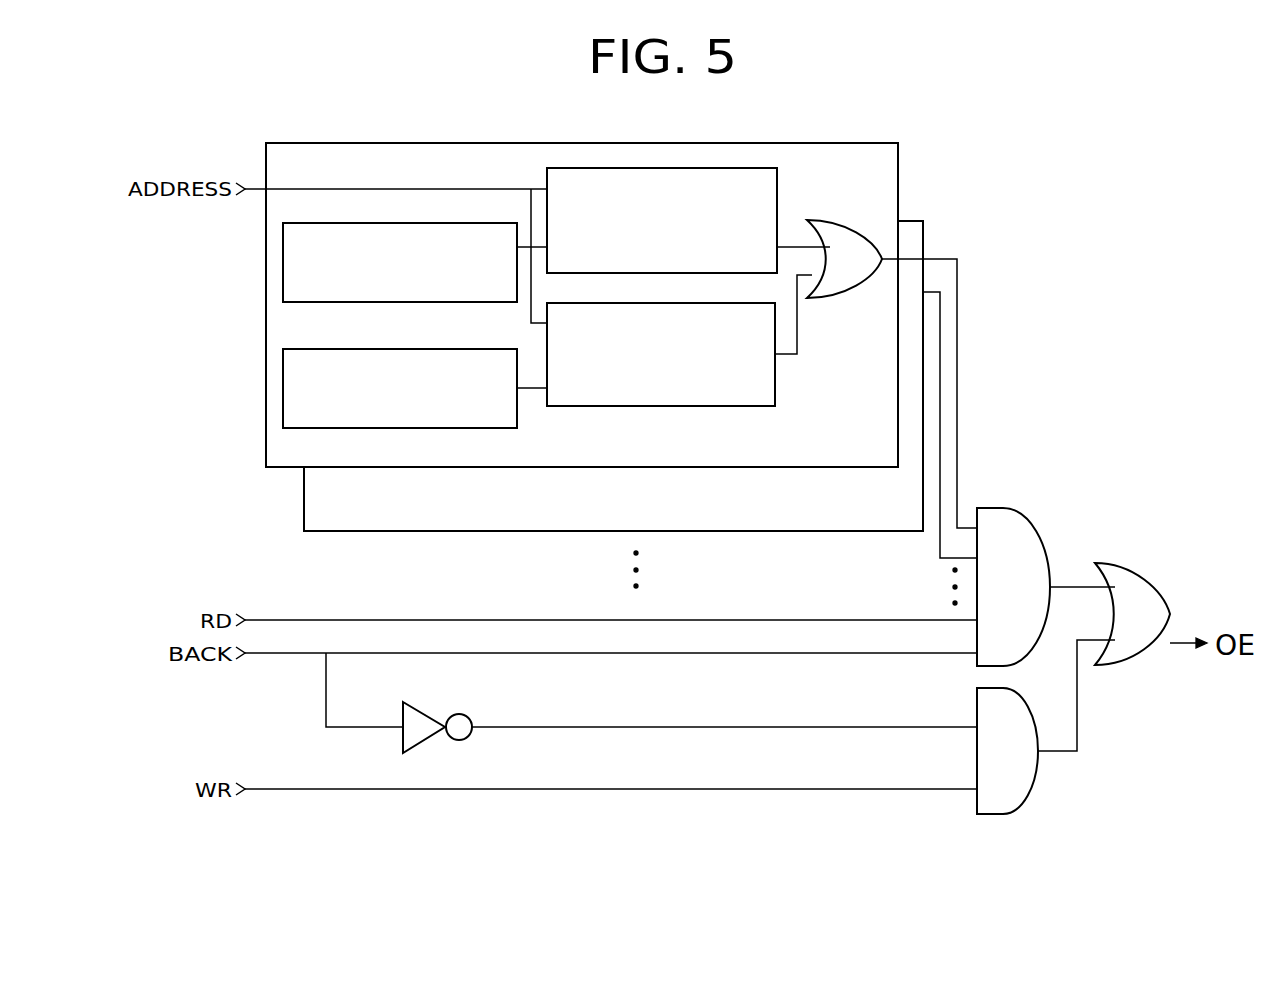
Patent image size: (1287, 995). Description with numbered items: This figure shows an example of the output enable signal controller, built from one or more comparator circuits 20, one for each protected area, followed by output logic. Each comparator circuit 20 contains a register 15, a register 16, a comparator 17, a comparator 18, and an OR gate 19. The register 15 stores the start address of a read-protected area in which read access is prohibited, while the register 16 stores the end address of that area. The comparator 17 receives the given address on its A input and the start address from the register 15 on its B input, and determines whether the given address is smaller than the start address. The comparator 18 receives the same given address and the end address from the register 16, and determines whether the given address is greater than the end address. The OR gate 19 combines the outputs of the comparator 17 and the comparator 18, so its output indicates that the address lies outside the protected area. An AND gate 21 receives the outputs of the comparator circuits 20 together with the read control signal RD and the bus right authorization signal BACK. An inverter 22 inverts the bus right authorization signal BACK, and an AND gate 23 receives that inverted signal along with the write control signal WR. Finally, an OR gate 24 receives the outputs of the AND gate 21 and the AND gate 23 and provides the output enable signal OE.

The register 15 is at (433, 302).
The register 16 is at (517, 408).
The comparator 17 is at (777, 197).
The comparator 18 is at (776, 372).
The OR gate 19 is at (842, 218).
The comparator circuit 20 is at (770, 143).
The AND gate 21 is at (1003, 507).
The inverter 22 is at (422, 707).
The AND gate 23 is at (1035, 783).
The OR gate 24 is at (1132, 562).